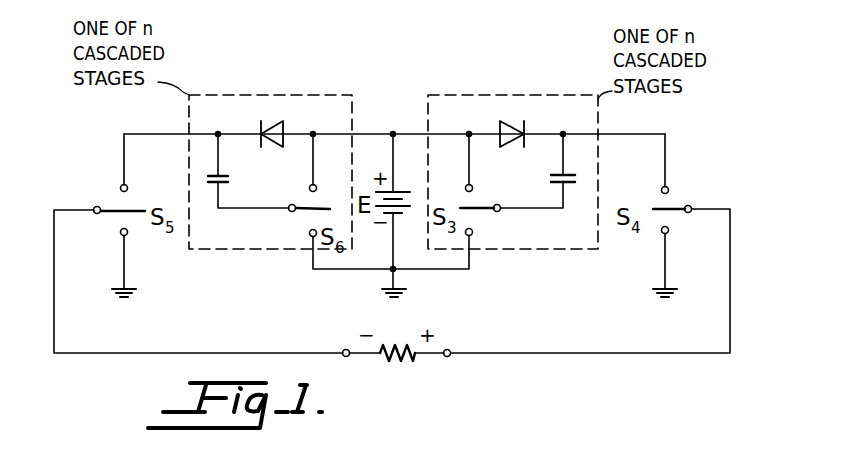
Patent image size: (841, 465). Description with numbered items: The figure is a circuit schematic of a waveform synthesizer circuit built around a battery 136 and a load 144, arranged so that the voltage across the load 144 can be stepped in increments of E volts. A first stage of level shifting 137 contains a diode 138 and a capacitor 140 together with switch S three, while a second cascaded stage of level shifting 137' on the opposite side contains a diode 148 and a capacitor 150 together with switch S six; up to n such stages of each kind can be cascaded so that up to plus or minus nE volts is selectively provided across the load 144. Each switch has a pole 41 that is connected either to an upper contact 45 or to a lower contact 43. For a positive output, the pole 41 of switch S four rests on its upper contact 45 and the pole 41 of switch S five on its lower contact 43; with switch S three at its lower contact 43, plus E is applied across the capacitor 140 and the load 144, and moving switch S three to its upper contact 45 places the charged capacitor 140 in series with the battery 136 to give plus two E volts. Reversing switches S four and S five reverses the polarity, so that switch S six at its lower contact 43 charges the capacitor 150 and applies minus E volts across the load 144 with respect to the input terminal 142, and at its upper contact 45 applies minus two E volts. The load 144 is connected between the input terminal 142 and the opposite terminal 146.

The pole 41 is at (95, 207).
The lower contact 43 is at (127, 236).
The upper contact 45 is at (126, 187).
The battery 136 is at (404, 213).
The stage of level shifting 137 is at (513, 146).
The cascaded stage of level shifting 137' is at (278, 146).
The diode 138 is at (528, 124).
The capacitor 140 is at (551, 177).
The input terminal 142 is at (449, 350).
The load 144 is at (410, 360).
The negative output terminal 146 is at (345, 350).
The diode 148 is at (283, 124).
The capacitor 150 is at (230, 176).